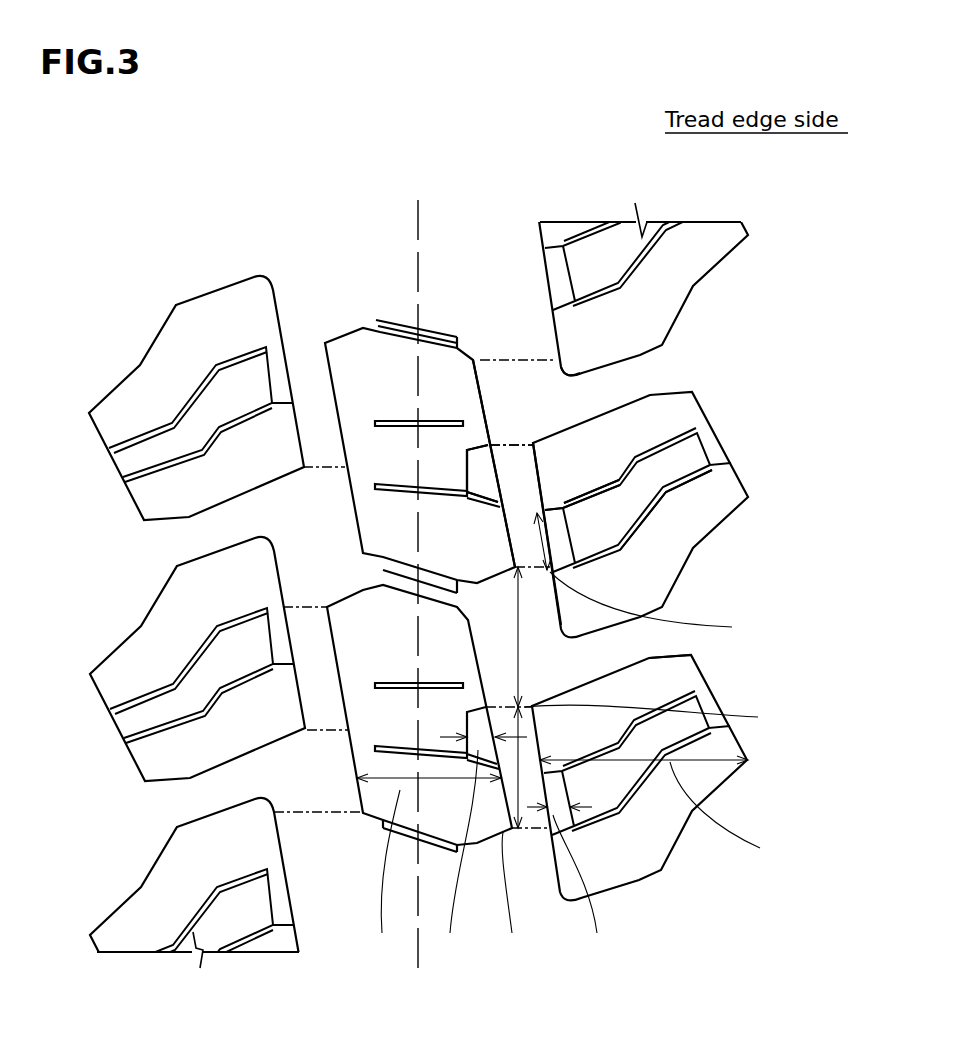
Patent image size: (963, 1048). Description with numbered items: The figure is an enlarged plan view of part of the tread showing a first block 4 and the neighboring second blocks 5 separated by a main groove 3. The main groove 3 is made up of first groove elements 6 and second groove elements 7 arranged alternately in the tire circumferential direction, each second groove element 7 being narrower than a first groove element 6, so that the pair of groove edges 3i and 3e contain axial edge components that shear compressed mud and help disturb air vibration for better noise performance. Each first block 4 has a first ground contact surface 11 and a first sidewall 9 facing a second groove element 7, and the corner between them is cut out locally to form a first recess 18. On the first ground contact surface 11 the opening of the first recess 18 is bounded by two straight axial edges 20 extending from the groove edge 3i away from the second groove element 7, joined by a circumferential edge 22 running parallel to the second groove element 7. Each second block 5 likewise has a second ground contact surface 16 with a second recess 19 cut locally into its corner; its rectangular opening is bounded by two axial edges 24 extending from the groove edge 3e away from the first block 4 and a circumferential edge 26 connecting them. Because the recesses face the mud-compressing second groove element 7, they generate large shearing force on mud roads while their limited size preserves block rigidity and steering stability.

The main groove 3 is at (419, 586).
The groove edge 3i is at (486, 337).
The groove edge 3e is at (653, 672).
The first block 4 is at (413, 413).
The first ground contact surface 11 is at (420, 456).
The second block 5 is at (450, 586).
The second ground contact surface 16 is at (640, 515).
The first groove element 6 is at (614, 442).
The second groove element 7 is at (640, 493).
The first sidewall 9 is at (277, 718).
The first recess 18 is at (254, 675).
The second recess 19 is at (675, 549).
The axial edge 20 is at (376, 367).
The circumferential edge 22 is at (369, 344).
The axial edge 24 is at (673, 503).
The circumferential edge 26 is at (669, 476).